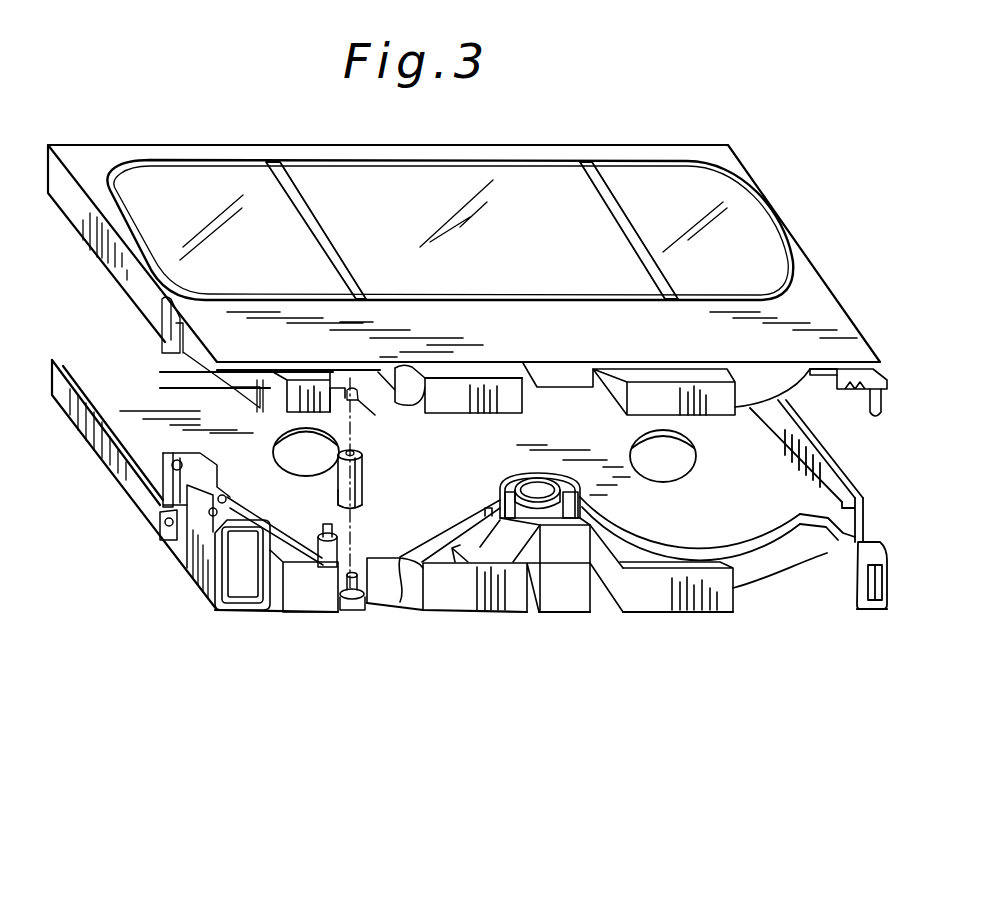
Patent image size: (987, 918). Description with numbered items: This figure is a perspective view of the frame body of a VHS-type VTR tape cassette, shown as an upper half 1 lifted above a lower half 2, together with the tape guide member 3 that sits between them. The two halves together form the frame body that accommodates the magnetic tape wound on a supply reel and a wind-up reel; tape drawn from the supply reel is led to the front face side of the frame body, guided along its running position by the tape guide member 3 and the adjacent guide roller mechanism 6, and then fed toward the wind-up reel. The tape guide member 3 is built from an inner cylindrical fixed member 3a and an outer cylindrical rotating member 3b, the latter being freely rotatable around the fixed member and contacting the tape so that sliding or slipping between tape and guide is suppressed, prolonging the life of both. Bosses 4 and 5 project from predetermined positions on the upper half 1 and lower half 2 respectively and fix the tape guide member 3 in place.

The upper half 1 is at (820, 257).
The lower half 2 is at (860, 487).
The tape guide member 3 is at (362, 478).
The inner cylindrical fixed member 3a is at (362, 446).
The outer cylindrical rotating member 3b is at (340, 489).
The boss 4 is at (360, 394).
The boss 5 is at (360, 604).
The guide roller mechanism 6 is at (331, 547).